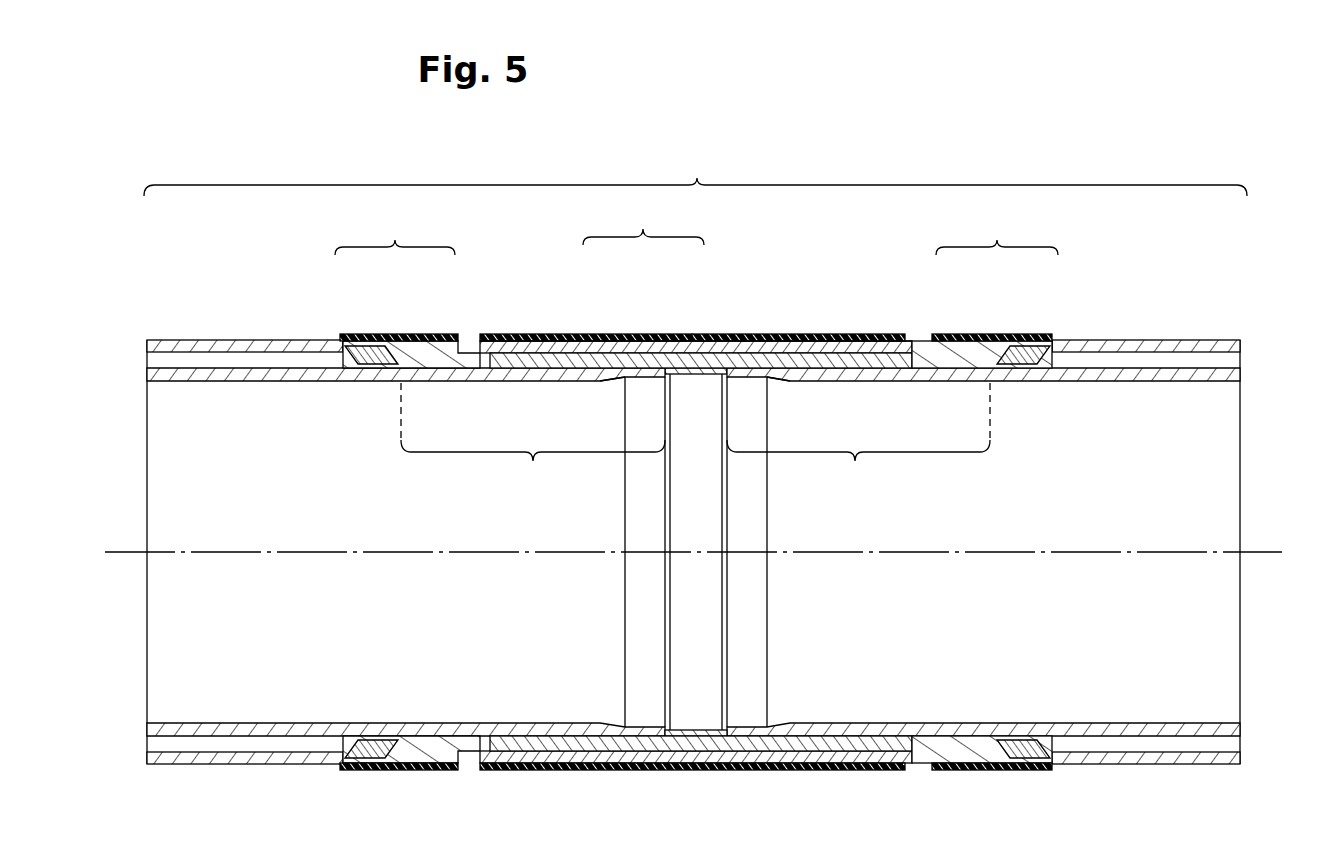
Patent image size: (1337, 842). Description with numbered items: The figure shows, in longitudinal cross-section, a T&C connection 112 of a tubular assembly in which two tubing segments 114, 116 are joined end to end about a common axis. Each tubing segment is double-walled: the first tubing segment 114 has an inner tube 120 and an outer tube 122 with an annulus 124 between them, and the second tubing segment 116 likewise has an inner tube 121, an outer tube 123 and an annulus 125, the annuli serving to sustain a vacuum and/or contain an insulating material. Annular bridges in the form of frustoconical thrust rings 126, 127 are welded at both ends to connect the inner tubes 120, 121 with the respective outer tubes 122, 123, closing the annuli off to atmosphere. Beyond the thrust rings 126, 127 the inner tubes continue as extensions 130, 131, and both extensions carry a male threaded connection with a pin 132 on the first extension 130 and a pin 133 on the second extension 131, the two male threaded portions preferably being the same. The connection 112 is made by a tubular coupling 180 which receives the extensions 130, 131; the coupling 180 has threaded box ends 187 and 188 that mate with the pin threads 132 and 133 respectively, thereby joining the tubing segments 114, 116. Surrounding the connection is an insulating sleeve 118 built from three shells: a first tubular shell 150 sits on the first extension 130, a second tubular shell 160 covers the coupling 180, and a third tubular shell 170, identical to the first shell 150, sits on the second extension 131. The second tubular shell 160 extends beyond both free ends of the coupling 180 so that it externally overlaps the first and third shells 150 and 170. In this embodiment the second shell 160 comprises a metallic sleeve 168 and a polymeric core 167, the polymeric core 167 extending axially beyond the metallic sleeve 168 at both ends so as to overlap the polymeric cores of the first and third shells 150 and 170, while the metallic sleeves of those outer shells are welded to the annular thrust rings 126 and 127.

The T&C connection 112 is at (695, 173).
The tubing segment 114 is at (166, 308).
The tubing segment 116 is at (1226, 306).
The insulating sleeve 118 is at (884, 292).
The inner tube 120 is at (227, 376).
The inner tube 121 is at (1166, 376).
The outer tube 122 is at (258, 340).
The outer tube 123 is at (1133, 340).
The annulus 124 is at (155, 360).
The annulus 125 is at (1245, 357).
The frustoconical thrust ring 126 is at (325, 340).
The frustoconical thrust ring 127 is at (1066, 345).
The extension 130 is at (533, 436).
The extension 131 is at (858, 436).
The pin 132 is at (625, 378).
The pin 133 is at (770, 378).
The first tubular shell 150 is at (407, 289).
The second tubular shell 160 is at (696, 283).
The polymeric core 167 is at (693, 340).
The metallic sleeve 168 is at (647, 340).
The third tubular shell 170 is at (985, 290).
The tubular coupling 180 is at (718, 336).
The threaded box end 187 is at (550, 340).
The threaded box end 188 is at (818, 338).